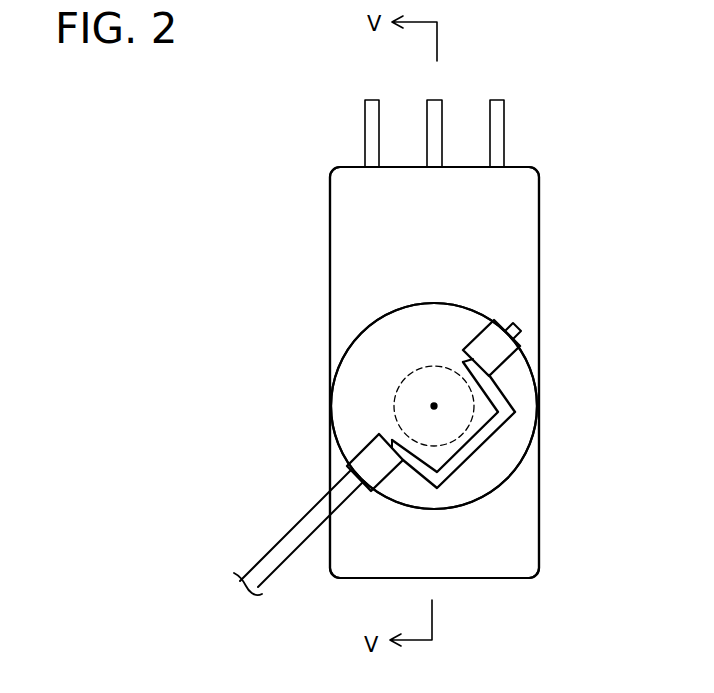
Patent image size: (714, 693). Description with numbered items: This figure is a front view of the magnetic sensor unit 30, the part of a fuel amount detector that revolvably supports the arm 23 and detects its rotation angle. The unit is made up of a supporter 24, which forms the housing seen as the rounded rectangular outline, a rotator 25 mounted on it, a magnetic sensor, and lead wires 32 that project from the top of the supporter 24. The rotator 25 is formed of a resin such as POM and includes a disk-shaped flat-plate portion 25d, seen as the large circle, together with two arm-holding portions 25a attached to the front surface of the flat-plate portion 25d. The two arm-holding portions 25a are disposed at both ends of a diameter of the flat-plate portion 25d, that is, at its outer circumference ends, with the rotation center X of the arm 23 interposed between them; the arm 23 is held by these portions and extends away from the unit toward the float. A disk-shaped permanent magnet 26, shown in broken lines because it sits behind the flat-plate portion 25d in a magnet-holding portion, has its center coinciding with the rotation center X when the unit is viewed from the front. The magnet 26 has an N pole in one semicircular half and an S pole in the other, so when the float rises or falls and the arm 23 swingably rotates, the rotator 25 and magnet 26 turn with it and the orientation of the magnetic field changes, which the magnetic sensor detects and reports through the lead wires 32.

The arm 23 is at (307, 527).
The supporter 24 is at (346, 212).
The rotator 25 is at (553, 405).
The arm-holding portion 25a is at (507, 347).
The flat-plate portion 25d is at (457, 315).
The magnet 26 is at (397, 393).
The magnetic sensor unit 30 is at (553, 189).
The lead wires 32 is at (378, 100).
The rotation center X is at (434, 406).